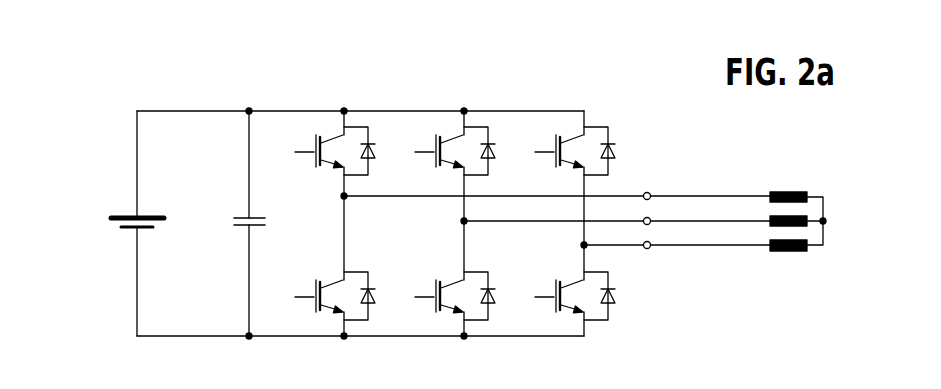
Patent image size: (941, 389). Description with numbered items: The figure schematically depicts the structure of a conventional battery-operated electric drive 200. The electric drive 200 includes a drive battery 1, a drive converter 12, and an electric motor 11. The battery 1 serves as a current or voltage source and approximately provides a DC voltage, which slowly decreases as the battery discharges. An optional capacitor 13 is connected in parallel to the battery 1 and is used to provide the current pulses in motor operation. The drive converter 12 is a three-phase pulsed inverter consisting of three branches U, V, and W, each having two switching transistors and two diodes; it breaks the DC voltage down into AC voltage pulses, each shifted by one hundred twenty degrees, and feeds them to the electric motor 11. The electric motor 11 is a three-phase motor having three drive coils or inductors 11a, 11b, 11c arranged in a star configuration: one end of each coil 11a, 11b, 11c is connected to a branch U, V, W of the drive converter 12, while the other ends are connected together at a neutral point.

The battery 1 is at (112, 226).
The capacitor 13 is at (233, 222).
The drive converter 12 is at (474, 86).
The electric drive 200 is at (532, 176).
The electric motor 11 is at (835, 223).
The drive coil 11a is at (793, 192).
The drive coil 11b is at (800, 216).
The drive coil 11c is at (790, 252).